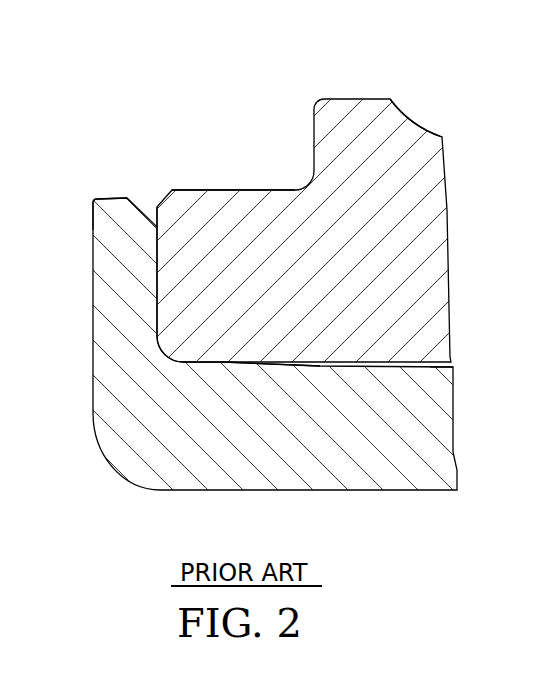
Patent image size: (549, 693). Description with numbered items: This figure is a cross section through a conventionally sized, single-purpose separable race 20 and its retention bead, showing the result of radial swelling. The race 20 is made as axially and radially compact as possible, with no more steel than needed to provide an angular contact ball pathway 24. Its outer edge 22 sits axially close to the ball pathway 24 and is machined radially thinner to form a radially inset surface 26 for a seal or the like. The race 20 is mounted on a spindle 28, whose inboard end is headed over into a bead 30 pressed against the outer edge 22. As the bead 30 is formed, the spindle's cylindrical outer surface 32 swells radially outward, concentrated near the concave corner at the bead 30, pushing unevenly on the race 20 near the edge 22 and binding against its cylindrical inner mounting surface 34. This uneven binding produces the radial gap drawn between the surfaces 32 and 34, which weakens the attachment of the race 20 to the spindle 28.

The separable race 20 is at (445, 155).
The outer edge 22 is at (153, 213).
The ball pathway 24 is at (412, 117).
The radially inset surface 26 is at (228, 190).
The spindle 28 is at (358, 487).
The bead 30 is at (122, 252).
The cylindrical outer surface 32 is at (440, 364).
The cylindrical inner mounting surface 34 is at (321, 362).